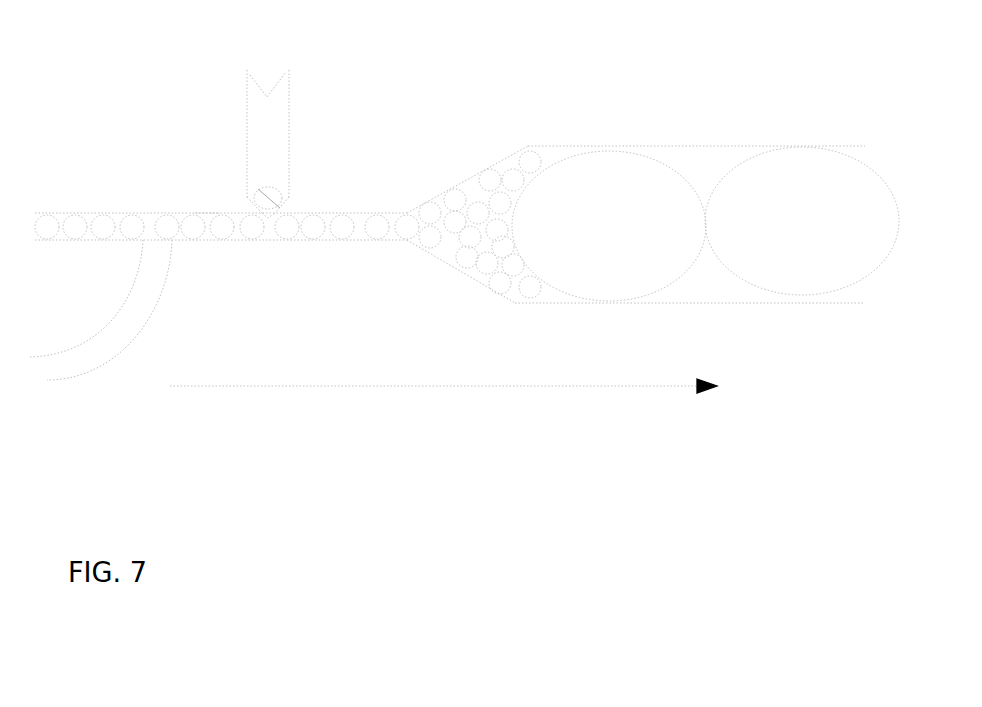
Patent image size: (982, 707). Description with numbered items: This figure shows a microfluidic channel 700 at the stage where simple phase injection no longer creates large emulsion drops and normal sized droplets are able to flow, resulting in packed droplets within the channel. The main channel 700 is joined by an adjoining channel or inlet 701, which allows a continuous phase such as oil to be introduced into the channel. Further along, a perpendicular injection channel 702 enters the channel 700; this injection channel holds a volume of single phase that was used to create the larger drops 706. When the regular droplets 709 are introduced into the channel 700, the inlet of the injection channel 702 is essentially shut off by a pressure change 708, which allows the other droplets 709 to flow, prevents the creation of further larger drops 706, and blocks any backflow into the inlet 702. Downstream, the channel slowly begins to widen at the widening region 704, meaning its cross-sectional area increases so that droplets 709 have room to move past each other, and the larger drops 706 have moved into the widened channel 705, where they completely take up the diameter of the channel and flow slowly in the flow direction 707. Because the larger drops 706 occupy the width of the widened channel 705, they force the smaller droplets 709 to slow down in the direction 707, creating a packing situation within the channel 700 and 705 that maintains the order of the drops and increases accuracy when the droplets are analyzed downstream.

The microfluidic channel 700 is at (227, 209).
The adjoining channel or inlet 701 is at (101, 334).
The injection channel 702 is at (274, 122).
The widening of the channel 704 is at (474, 213).
The widened channel 705 is at (688, 245).
The larger drops 706 is at (778, 147).
The flow direction 707 is at (443, 410).
The pressure change 708 is at (295, 199).
The regular droplets 709 is at (207, 213).